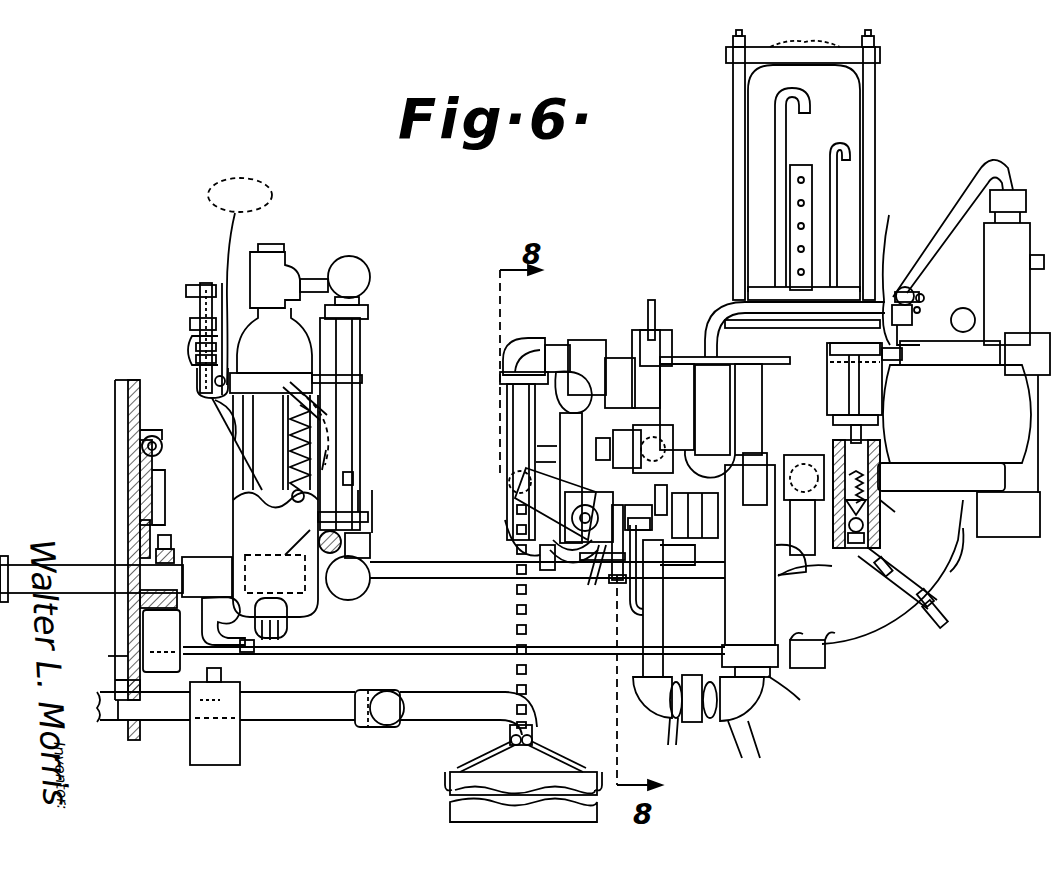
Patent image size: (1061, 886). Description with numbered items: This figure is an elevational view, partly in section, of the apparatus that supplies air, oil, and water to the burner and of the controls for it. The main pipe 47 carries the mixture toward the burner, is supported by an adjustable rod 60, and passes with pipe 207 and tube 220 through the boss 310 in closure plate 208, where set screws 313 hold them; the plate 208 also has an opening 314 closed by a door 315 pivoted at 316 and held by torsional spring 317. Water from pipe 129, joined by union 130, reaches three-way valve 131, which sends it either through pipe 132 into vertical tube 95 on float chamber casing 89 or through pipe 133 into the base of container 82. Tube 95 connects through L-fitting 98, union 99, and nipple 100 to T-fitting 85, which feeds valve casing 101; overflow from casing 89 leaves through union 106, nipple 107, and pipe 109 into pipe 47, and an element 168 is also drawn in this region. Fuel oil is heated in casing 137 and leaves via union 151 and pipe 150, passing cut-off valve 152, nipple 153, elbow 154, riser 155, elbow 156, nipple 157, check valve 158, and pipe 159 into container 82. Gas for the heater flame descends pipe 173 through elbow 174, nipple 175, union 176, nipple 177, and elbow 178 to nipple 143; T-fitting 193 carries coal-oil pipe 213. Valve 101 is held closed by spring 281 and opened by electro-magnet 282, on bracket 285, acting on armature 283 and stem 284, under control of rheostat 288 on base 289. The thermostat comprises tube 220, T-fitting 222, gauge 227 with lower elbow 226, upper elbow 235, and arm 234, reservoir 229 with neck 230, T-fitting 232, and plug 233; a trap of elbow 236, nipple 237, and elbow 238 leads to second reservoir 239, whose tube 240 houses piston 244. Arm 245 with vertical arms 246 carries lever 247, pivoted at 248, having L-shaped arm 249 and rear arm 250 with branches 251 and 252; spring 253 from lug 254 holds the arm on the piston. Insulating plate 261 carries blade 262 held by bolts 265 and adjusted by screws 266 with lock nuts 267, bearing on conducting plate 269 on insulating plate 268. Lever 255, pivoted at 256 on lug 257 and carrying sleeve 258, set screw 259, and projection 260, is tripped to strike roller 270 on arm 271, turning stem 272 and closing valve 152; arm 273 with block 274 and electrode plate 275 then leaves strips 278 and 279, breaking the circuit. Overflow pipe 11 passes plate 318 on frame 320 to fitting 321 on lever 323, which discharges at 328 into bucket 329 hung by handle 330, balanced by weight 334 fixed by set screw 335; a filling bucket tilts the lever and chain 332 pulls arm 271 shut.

The overflow pipe 11 is at (110, 700).
The pipe 47 is at (416, 629).
The rod or post 60 is at (800, 672).
The container 82 is at (803, 165).
The T-fitting 85 is at (804, 505).
The float chamber casing 89 is at (677, 407).
The vertical tube 95 is at (712, 410).
The L-fitting 98 is at (710, 465).
The union 99 is at (755, 479).
The nipple 100 is at (768, 485).
The valve casing 101 is at (880, 528).
The union 106 is at (637, 380).
The nipple 107 is at (612, 385).
The pipe 109 is at (570, 432).
The pipe 129 is at (957, 212).
The union 130 is at (982, 222).
The three-way valve 131 is at (899, 288).
The pipe 132 is at (724, 314).
The pipe 133 is at (906, 322).
The cylindrical vertical casing 137 is at (725, 605).
The nipple 143 is at (768, 680).
The pipe 150 is at (617, 583).
The union 151 is at (695, 515).
The cut-off valve 152 is at (590, 580).
The nipple 153 is at (564, 491).
The elbow 154 is at (505, 530).
The riser 155 is at (530, 447).
The elbow 156 is at (522, 357).
The nipple 157 is at (545, 348).
The check valve 158 is at (587, 367).
The pipe 159 is at (726, 318).
The valve cam 168 is at (573, 392).
The depending pipe 173 is at (655, 665).
The elbow 174 is at (662, 697).
The nipple 175 is at (690, 722).
The union 176 is at (710, 735).
The nipple 177 is at (747, 740).
The elbow 178 is at (762, 718).
The T-fitting 193 is at (632, 345).
The pipe 207 is at (410, 560).
The closure plate 208 is at (120, 388).
The pipe 213 is at (652, 310).
The horizontal tube 220 is at (72, 585).
The T-fitting 222 is at (207, 577).
The lower end elbow 226 is at (350, 598).
The glass gauge 227 is at (350, 332).
The reservoir 229 is at (268, 352).
The upper neck 230 is at (274, 340).
The T-fitting 232 is at (280, 270).
The plug 233 is at (275, 242).
The horizontal arm 234 is at (337, 263).
The upper elbow 235 is at (357, 273).
The elbow 236 is at (213, 624).
The nipple 237 is at (245, 648).
The elbow 238 is at (270, 628).
The second reservoir 239 is at (275, 506).
The vertical cylinder or tube 240 is at (262, 447).
The tube or hollow piston 244 is at (268, 442).
The forwardly projecting arm 245 is at (238, 410).
The vertical arms 246 is at (215, 300).
The lever 247 is at (271, 377).
The pivot 248 is at (212, 390).
The L-shaped arm 249 is at (197, 380).
The rearwardly extended arm 250 is at (232, 432).
The upper branch 251 is at (325, 375).
The lower branch 252 is at (342, 452).
The contractile spring 253 is at (280, 447).
The lug 254 is at (277, 509).
The lever 255 is at (365, 516).
The pivot 256 is at (318, 545).
The lug 257 is at (277, 561).
The sleeve 258 is at (335, 381).
The set screw 259 is at (355, 476).
The lateral projection 260 is at (332, 404).
The insulating plate 261 is at (204, 282).
The blade or prong 262 is at (240, 195).
The metal bolts 265 is at (188, 292).
The screws 266 is at (190, 325).
The lock nuts 267 is at (192, 338).
The insulating plate 268 is at (196, 350).
The electrically conducting plate 269 is at (196, 362).
The anti-friction roller 270 is at (530, 463).
The arm 271 is at (510, 493).
The rotary operating stem 272 is at (588, 505).
The arm 273 is at (660, 500).
The insulating block 274 is at (638, 517).
The electrode plate 275 is at (677, 555).
The resilient metallic strip 278 is at (636, 616).
The resilient metallic strip 279 is at (620, 572).
The compressed coil spring 281 is at (895, 512).
The electro-magnet 282 is at (872, 385).
The armature 283 is at (880, 422).
The operating stem 284 is at (880, 438).
The L-shaped bracket 285 is at (900, 280).
The rheostat 288 is at (936, 476).
The base 289 is at (941, 477).
The boss 310 is at (176, 552).
The set screws 313 is at (166, 537).
The opening 314 is at (130, 480).
The door 315 is at (158, 492).
The pivot 316 is at (142, 445).
The torsional spring 317 is at (147, 465).
The plate 318 is at (140, 740).
The marginal frame 320 is at (125, 740).
The fitting 321 is at (400, 696).
The lever 323 is at (345, 718).
The discharge orifice 328 is at (555, 758).
The bucket or receptacle 329 is at (455, 797).
The handle 330 is at (485, 757).
The chain or flexible connection 332 is at (517, 605).
The weight 334 is at (215, 723).
The set screw 335 is at (207, 674).